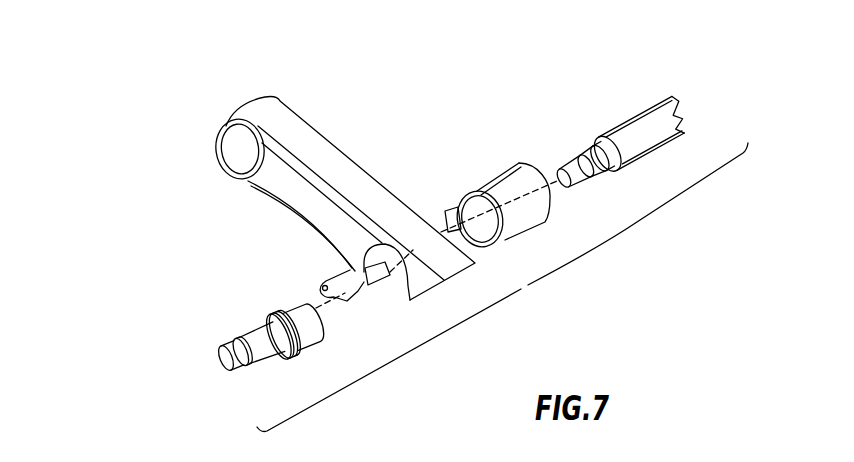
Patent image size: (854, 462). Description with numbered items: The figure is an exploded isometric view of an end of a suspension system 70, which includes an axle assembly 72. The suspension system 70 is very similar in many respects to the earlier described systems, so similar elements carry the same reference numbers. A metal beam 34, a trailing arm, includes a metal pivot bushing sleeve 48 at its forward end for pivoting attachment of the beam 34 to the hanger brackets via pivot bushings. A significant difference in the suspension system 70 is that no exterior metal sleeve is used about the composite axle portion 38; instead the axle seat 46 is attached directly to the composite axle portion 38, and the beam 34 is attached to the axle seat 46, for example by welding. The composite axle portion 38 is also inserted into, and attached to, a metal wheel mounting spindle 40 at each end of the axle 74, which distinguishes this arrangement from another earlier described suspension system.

The suspension system 70 is at (208, 72).
The beam 34 is at (360, 166).
The pivot bushing sleeve 48 is at (291, 102).
The wheel mounting spindle 40 is at (287, 296).
The axle seat 46 is at (487, 182).
The axle assembly 72 is at (655, 86).
The composite axle portion 38 is at (674, 137).
The axle 74 is at (528, 287).